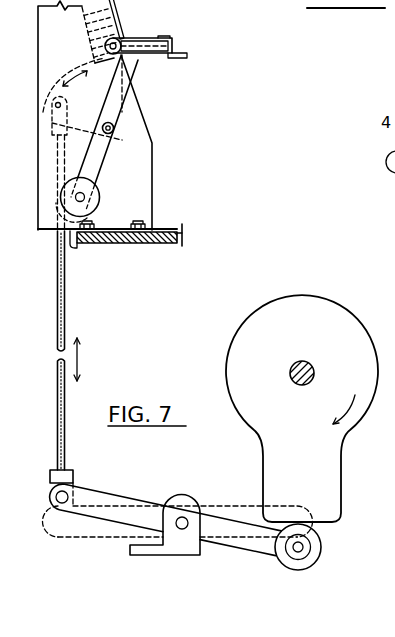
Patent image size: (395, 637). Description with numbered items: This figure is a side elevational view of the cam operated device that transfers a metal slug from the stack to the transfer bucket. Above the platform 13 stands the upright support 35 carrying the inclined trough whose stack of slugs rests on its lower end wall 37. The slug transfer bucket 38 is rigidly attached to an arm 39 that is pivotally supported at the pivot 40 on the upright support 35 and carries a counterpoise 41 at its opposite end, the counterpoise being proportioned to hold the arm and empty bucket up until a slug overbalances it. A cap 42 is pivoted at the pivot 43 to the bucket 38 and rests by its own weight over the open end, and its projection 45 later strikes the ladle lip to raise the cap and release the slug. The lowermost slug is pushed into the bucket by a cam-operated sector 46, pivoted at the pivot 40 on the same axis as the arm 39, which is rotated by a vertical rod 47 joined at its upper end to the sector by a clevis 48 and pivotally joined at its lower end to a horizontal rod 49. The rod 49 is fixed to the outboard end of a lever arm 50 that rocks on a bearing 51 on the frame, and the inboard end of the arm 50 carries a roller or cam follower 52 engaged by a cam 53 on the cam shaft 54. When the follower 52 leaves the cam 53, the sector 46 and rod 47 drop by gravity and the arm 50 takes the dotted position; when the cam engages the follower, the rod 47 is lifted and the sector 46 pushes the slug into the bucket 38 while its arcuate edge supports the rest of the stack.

The platform 13 is at (160, 231).
The upright support 35 is at (38, 27).
The lower end wall 37 is at (106, 58).
The slug transfer bucket 38 is at (148, 38).
The arm 39 is at (141, 66).
The pivot 40 is at (112, 133).
The counterpoise 41 is at (99, 201).
The cap 42 is at (172, 38).
The pivot 43 is at (117, 40).
The projection 45 is at (188, 57).
The cam-operated sector 46 is at (62, 75).
The vertical rod 47 is at (58, 304).
The clevis 48 is at (53, 126).
The horizontal rod 49 is at (66, 493).
The lever arm 50 is at (115, 499).
The bearing 51 is at (188, 509).
The roller or cam follower 52 is at (318, 559).
The cam 53 is at (345, 463).
The cam shaft 54 is at (313, 373).